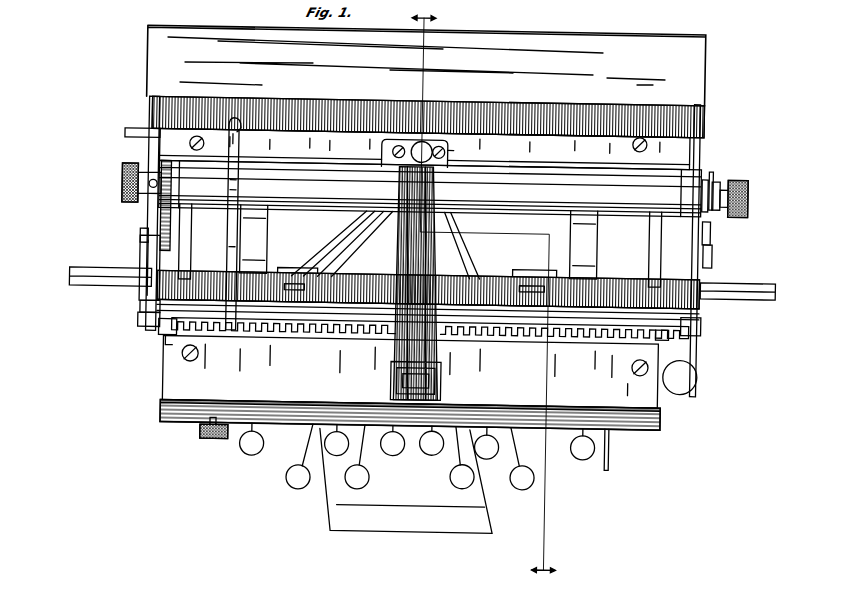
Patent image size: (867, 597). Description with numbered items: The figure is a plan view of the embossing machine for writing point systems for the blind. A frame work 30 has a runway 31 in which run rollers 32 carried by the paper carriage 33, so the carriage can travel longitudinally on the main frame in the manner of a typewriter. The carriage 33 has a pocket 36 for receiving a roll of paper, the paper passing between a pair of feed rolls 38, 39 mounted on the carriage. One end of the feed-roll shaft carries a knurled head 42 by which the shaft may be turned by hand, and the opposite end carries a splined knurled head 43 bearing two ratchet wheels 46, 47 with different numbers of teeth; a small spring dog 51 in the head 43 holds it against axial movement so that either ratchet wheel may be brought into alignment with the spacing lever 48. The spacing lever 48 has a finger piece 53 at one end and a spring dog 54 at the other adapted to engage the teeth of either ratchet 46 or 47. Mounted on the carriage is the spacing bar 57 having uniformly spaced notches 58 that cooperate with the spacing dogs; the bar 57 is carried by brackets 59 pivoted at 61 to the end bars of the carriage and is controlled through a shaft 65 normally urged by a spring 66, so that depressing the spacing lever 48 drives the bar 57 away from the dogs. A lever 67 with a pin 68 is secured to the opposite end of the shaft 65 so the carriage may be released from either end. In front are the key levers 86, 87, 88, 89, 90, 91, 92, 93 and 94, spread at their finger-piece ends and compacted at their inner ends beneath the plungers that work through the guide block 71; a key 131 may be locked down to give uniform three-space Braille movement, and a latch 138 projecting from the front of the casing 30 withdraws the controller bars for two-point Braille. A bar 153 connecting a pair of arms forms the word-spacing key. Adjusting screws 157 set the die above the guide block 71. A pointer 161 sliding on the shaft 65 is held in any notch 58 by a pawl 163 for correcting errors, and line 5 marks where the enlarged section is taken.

The section line 5 is at (483, 305).
The frame work 30 is at (665, 426).
The runway 31 is at (90, 279).
The rollers 32 is at (317, 275).
The paper carriage 33 is at (666, 109).
The pocket 36 is at (258, 235).
The feed roll 38 is at (338, 212).
The feed roll 39 is at (628, 256).
The knurled head 42 is at (121, 191).
The knurled head 43 is at (747, 183).
The ratchet wheel 46 is at (703, 175).
The ratchet wheel 47 is at (714, 177).
The spacing lever 48 is at (701, 326).
The spring dog 51 is at (142, 241).
The finger piece 53 is at (690, 368).
The spring dog 54 is at (710, 232).
The spacing bar 57 is at (161, 337).
The notches 58 is at (292, 337).
The brackets 59 is at (140, 267).
The pivot 61 is at (712, 250).
The shaft 65 is at (331, 320).
The spring 66 is at (664, 336).
The lever 67 is at (141, 310).
The pin 68 is at (139, 323).
The guide block 71 is at (449, 158).
The key lever 86 is at (254, 452).
The key lever 87 is at (297, 481).
The key lever 88 is at (341, 454).
The key lever 89 is at (365, 481).
The key lever 90 is at (397, 451).
The key lever 91 is at (433, 453).
The key lever 92 is at (459, 480).
The key lever 93 is at (494, 457).
The key lever 94 is at (528, 488).
The key 131 is at (588, 457).
The latch 138 is at (616, 461).
The bar 153 is at (406, 480).
The adjusting screws 157 is at (422, 148).
The pointer 161 is at (229, 121).
The pawl 163 is at (170, 349).